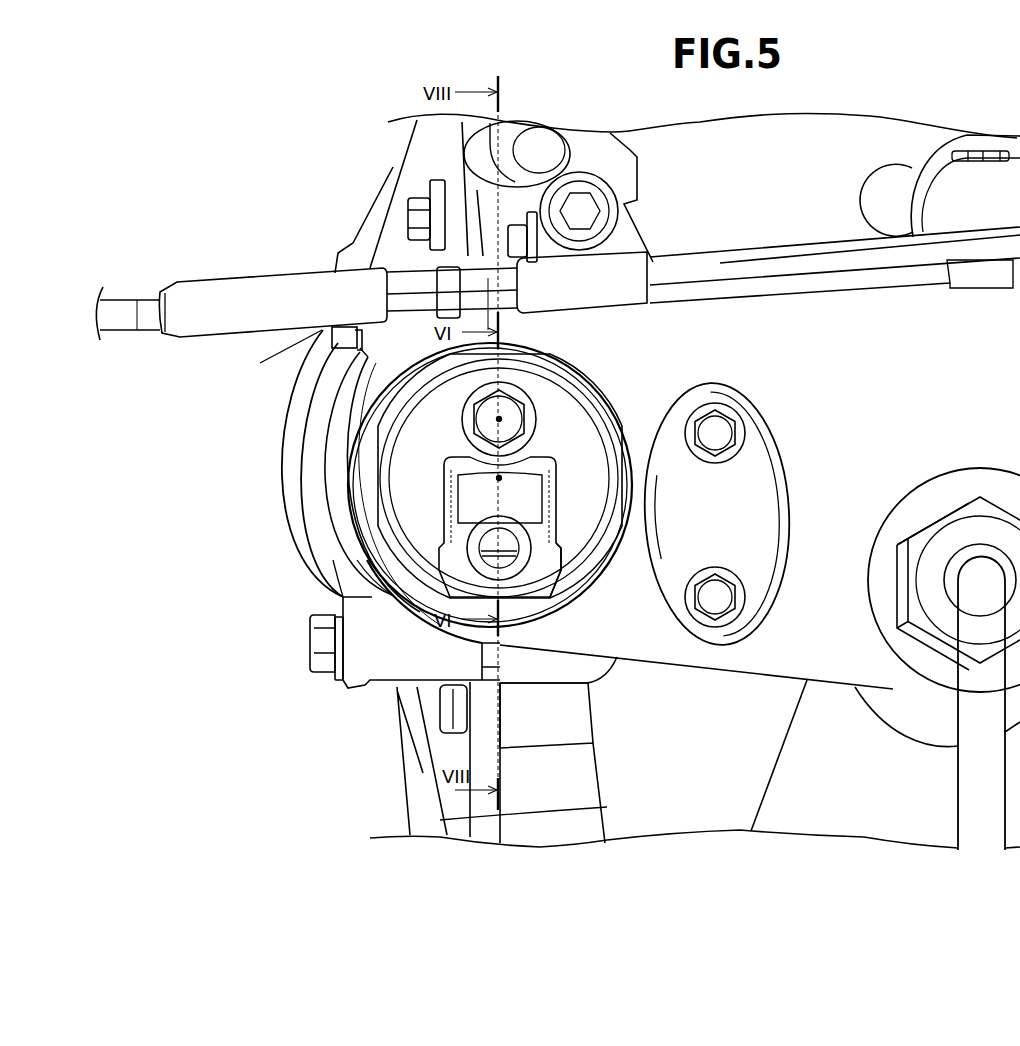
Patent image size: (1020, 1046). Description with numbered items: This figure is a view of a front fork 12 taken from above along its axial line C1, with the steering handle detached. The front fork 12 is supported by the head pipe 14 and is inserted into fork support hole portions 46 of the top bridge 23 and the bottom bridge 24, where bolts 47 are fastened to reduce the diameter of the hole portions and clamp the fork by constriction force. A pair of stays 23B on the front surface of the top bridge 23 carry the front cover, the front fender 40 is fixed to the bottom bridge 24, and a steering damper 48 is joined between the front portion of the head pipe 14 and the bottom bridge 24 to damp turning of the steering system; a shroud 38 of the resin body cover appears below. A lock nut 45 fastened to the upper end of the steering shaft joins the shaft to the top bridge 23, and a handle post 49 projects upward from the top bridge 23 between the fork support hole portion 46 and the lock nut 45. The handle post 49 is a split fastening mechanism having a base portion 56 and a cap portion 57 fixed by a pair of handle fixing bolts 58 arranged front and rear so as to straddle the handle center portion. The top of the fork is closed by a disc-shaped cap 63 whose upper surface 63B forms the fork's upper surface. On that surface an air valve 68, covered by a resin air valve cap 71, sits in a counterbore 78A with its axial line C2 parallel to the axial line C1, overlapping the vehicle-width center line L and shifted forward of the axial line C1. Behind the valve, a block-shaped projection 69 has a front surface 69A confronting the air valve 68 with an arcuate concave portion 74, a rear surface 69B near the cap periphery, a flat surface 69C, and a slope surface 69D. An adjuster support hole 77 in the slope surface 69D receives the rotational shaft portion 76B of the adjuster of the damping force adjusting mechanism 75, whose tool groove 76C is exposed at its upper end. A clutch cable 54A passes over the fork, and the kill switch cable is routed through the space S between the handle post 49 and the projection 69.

The front fork 12 is at (357, 437).
The head pipe 14 is at (900, 718).
The top bridge 23 is at (789, 648).
The stay 23B is at (548, 243).
The bottom bridge 24 is at (353, 622).
The shroud 38 is at (447, 813).
The front fender 40 is at (672, 233).
The lock nut 45 is at (920, 512).
The fork support hole portion 46 is at (337, 470).
The bolt 47 is at (340, 335).
The steering damper 48 is at (980, 180).
The handle post 49 is at (786, 437).
The clutch cable 54A is at (140, 322).
The base portion 56 is at (779, 520).
The cap portion 57 is at (750, 490).
The handle fixing bolt 58 is at (720, 430).
The cap 63 is at (312, 527).
The upper surface of the cap 63B is at (420, 548).
The air valve 68 is at (367, 408).
The projection 69 is at (520, 494).
The front surface of the projection 69A is at (624, 416).
The rear surface of the projection 69B is at (515, 597).
The flat surface 69C is at (473, 490).
The slope surface 69D is at (545, 560).
The air valve cap 71 is at (522, 405).
The concave portion 74 is at (500, 466).
The damping force adjusting mechanism 75 is at (355, 572).
The rotational shaft portion 76B is at (512, 567).
The tool groove 76C is at (530, 562).
The adjuster support hole 77 is at (337, 595).
The counterbore 78A is at (515, 393).
The axial line of the front fork C1 is at (545, 455).
The axial line of the air valve C2 is at (503, 418).
The center line L is at (437, 710).
The space S is at (636, 542).